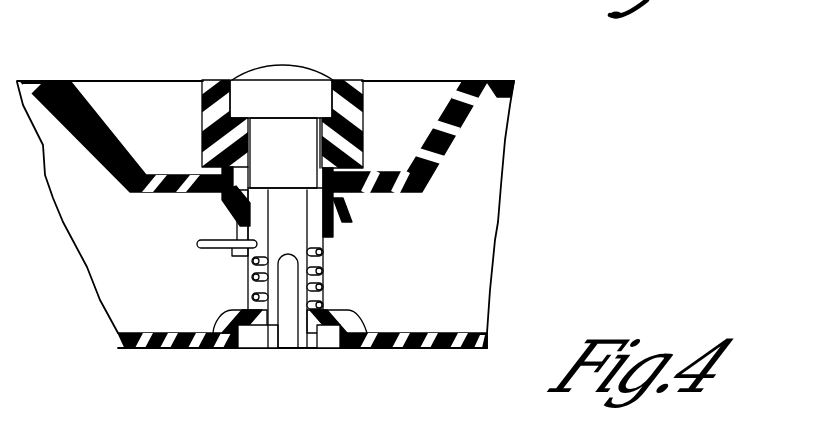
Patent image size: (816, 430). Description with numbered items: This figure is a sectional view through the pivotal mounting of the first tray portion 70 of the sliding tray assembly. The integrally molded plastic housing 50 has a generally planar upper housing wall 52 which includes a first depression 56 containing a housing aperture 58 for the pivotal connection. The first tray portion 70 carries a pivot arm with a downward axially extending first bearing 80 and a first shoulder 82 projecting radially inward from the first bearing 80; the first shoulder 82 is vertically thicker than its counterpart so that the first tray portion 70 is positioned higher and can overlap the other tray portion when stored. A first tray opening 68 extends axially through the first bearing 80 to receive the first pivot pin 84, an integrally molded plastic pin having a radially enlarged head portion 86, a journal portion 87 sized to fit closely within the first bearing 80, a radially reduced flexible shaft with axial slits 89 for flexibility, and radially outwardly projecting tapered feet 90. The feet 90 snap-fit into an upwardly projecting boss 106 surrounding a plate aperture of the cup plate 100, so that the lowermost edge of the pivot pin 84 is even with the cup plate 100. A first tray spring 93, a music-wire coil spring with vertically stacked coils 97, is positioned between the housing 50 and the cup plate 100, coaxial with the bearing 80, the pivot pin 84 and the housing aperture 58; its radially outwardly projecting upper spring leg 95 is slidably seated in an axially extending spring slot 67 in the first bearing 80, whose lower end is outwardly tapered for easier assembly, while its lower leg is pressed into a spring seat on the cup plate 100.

The housing 50 is at (48, 76).
The upper housing wall 52 is at (498, 82).
The first depression 56 is at (113, 124).
The housing aperture 58 is at (263, 185).
The spring slot 67 is at (234, 233).
The first tray opening 68 is at (337, 80).
The first tray portion 70 is at (381, 118).
The first bearing 80 is at (357, 90).
The first shoulder 82 is at (338, 165).
The first pivot pin 84 is at (239, 67).
The head portion 86 is at (277, 67).
The journal portion 87 is at (324, 181).
The axial slits 89 is at (288, 348).
The tapered feet 90 is at (263, 330).
The first tray spring 93 is at (340, 287).
The upper spring leg 95 is at (198, 244).
The coils 97 is at (252, 278).
The cup plate 100 is at (434, 355).
The boss 106 is at (337, 317).